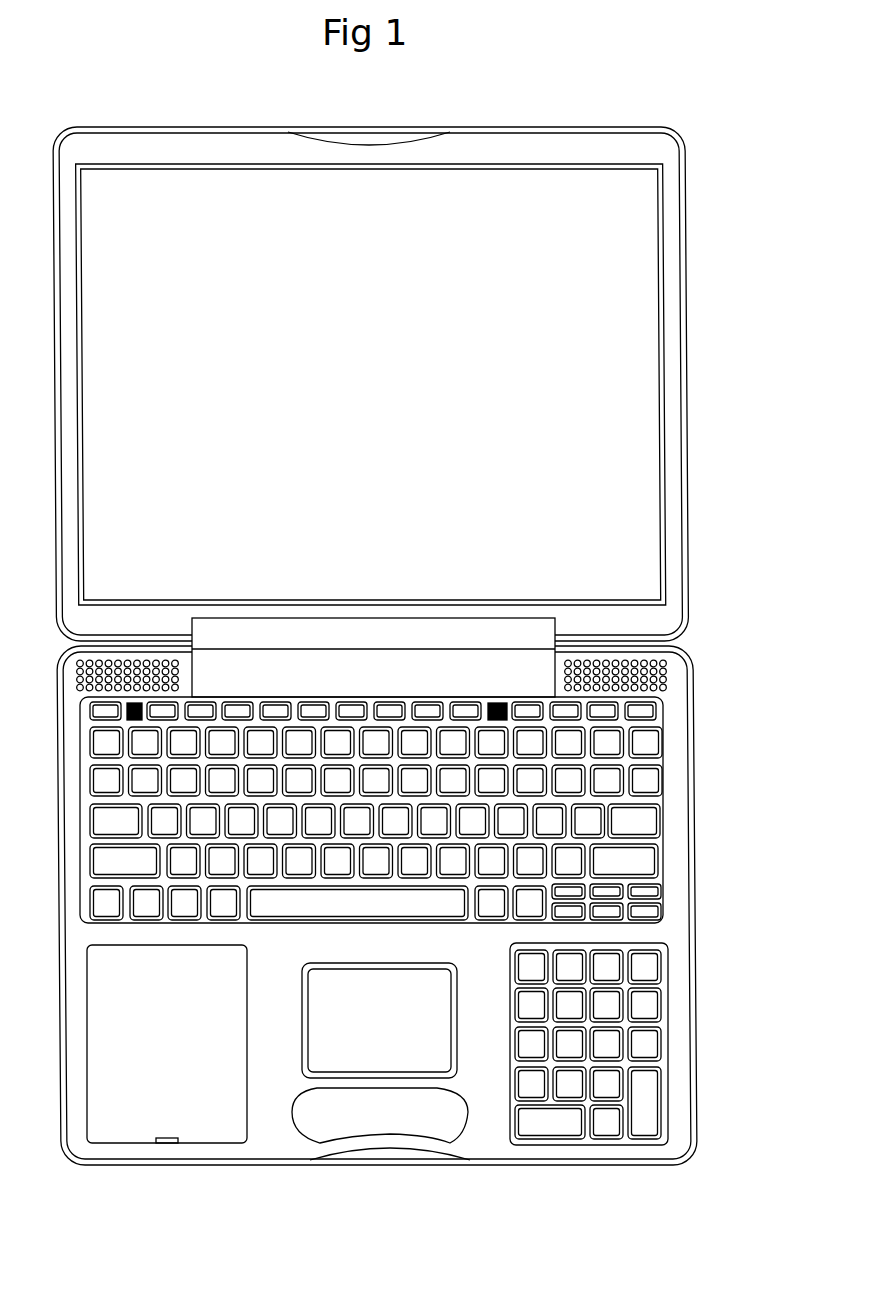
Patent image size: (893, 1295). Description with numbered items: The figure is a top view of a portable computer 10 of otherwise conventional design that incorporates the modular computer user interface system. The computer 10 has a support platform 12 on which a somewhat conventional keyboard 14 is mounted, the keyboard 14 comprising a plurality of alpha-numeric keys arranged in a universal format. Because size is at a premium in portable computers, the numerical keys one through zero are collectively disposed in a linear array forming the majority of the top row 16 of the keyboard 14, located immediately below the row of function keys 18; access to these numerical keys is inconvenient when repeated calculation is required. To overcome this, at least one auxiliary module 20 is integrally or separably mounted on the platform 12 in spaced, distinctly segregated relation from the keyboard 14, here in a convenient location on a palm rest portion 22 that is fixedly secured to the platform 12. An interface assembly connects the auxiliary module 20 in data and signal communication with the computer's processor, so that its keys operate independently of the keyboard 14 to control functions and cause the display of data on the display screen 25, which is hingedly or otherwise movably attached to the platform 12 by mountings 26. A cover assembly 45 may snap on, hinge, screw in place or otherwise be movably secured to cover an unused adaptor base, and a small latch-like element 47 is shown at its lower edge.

The portable computer 10 is at (696, 150).
The support platform 12 is at (693, 879).
The keyboard 14 is at (439, 783).
The top row of numerical keys 16 is at (668, 746).
The row of function keys 18 is at (674, 706).
The auxiliary module 20 is at (672, 1007).
The palm rest portion 22 is at (360, 1061).
The display screen 25 is at (558, 285).
The mountings 26 is at (530, 642).
The cover assembly 45 is at (210, 1075).
The latch 47 is at (173, 1145).